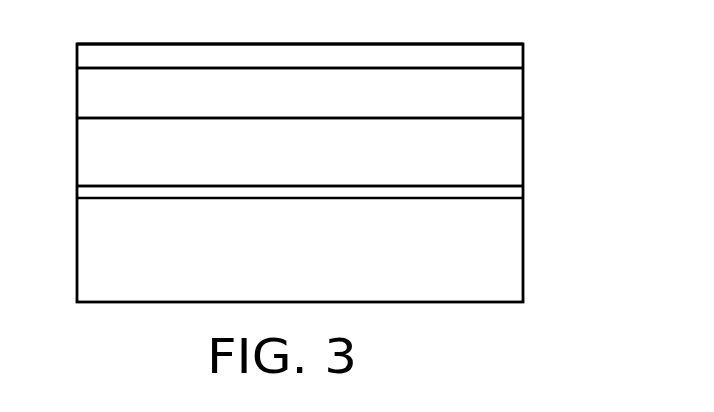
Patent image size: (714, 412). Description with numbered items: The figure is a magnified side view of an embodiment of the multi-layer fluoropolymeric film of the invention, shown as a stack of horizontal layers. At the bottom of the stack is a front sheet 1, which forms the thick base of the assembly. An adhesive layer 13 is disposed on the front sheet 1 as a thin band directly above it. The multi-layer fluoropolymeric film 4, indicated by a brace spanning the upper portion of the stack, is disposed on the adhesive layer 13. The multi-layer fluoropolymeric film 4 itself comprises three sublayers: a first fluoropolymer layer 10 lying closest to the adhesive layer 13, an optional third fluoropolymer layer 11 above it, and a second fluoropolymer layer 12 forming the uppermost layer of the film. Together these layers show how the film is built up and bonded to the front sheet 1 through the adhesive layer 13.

The front sheet 1 is at (523, 248).
The multi-layer fluoropolymeric film 4 is at (59, 44).
The first fluoropolymer layer 10 is at (523, 153).
The third fluoropolymer layer 11 is at (523, 93).
The second fluoropolymer layer 12 is at (523, 56).
The adhesive layer 13 is at (523, 193).